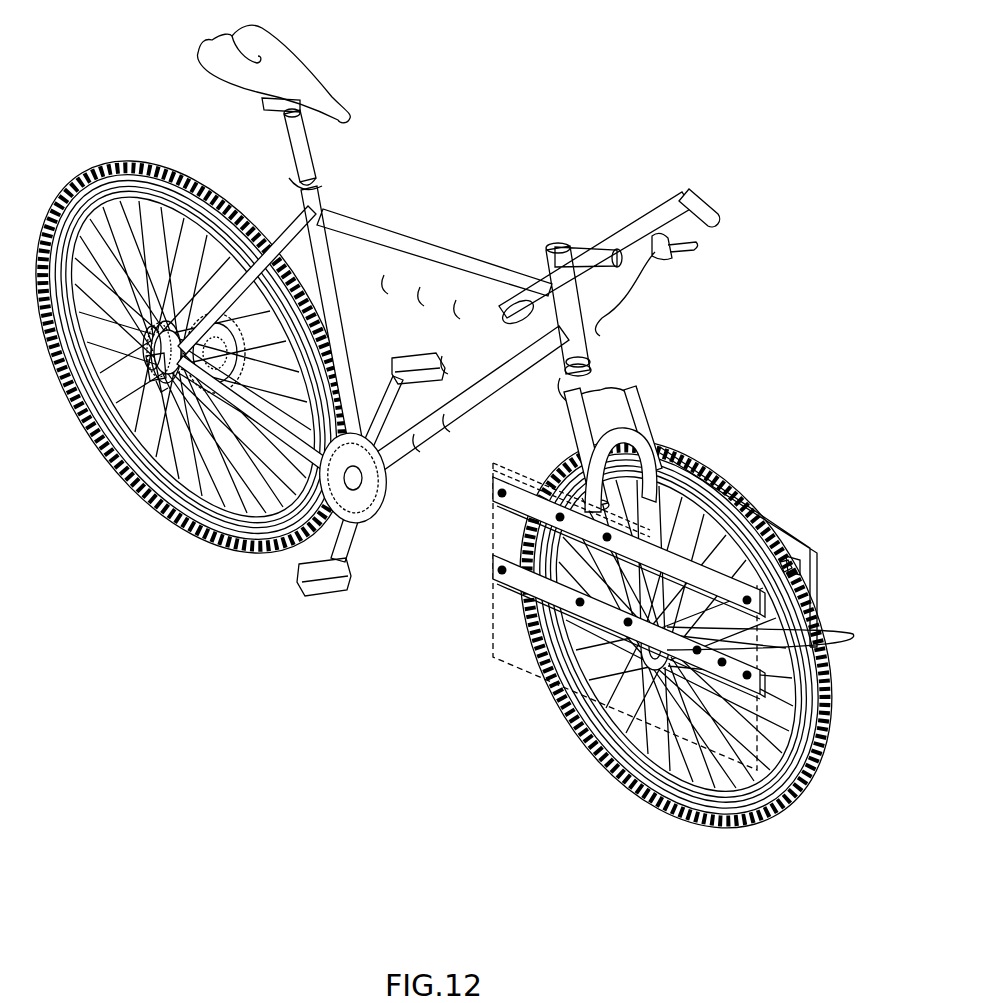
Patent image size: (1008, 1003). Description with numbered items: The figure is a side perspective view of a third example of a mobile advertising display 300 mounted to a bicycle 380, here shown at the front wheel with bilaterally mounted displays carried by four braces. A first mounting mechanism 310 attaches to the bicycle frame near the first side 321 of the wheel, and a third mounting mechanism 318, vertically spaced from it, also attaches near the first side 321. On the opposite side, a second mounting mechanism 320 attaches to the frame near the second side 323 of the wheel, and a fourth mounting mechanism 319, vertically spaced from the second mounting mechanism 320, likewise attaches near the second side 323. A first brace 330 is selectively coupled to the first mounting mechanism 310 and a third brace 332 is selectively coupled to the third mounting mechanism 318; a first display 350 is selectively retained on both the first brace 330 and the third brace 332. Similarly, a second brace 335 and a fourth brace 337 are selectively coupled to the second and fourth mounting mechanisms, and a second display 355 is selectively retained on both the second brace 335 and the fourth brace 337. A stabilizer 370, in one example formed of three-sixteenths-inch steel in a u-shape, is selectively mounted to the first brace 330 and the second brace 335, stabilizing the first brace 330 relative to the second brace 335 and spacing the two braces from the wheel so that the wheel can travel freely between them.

The bicycle 380 is at (447, 453).
The mobile advertising display 300 is at (658, 617).
The first mounting mechanism 310 is at (676, 633).
The third mounting mechanism 318 is at (627, 513).
The fourth mounting mechanism 319 is at (676, 633).
The second mounting mechanism 320 is at (550, 463).
The first side 321 is at (640, 655).
The second side 323 is at (676, 633).
The first brace 330 is at (515, 574).
The third brace 332 is at (512, 496).
The second brace 335 is at (792, 618).
The fourth brace 337 is at (770, 538).
The first display 350 is at (503, 657).
The second display 355 is at (812, 550).
The stabilizer 370 is at (847, 643).